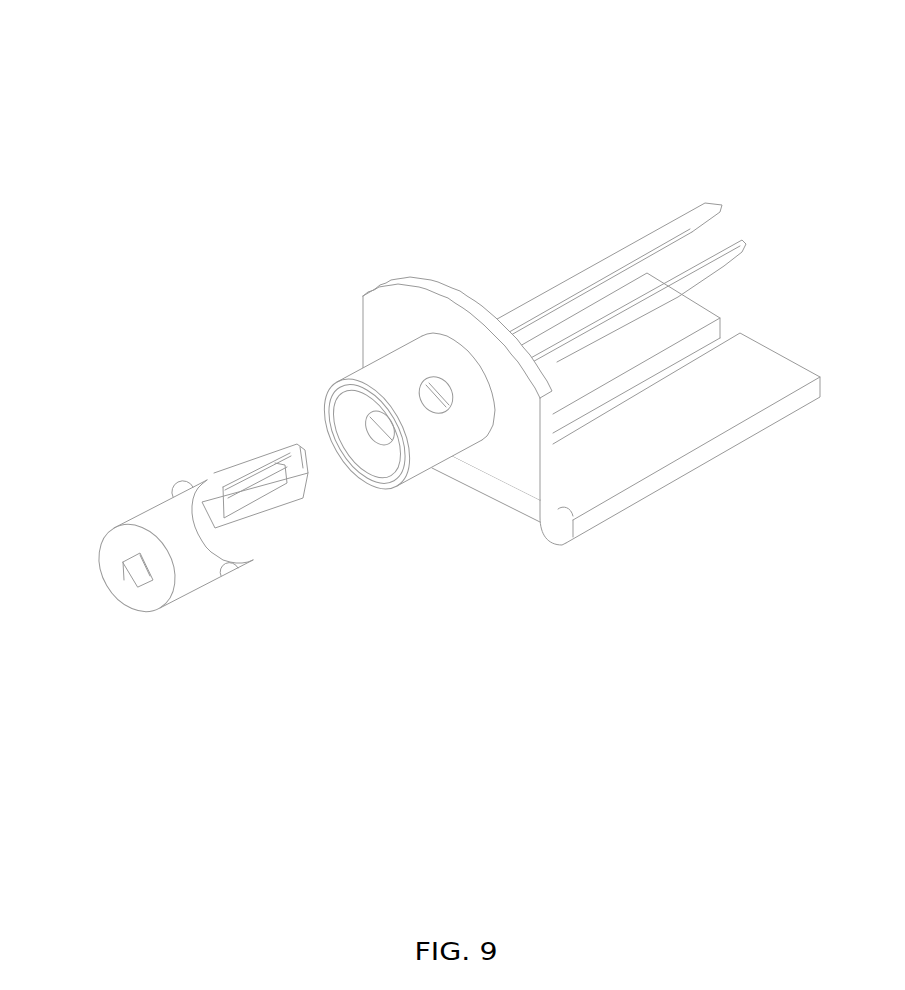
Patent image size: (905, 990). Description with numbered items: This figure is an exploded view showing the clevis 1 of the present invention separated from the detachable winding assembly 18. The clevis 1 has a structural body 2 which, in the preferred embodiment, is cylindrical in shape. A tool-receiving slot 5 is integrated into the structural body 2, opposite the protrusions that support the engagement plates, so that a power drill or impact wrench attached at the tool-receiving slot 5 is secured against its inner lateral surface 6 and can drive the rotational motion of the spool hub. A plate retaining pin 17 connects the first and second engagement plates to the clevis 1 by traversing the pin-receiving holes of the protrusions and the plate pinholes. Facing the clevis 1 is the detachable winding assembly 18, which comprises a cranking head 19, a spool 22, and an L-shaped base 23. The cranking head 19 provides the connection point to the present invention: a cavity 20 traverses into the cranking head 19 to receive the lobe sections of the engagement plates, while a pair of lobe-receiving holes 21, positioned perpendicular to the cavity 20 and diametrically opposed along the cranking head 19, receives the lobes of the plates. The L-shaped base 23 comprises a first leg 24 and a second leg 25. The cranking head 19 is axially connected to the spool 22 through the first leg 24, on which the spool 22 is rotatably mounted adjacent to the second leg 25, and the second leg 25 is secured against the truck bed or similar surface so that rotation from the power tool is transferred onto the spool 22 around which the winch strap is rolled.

The clevis 1 is at (180, 420).
The structural body 2 is at (157, 512).
The tool-receiving slot 5 is at (140, 580).
The inner lateral surface 6 is at (128, 560).
The plate retaining pin 17 is at (232, 578).
The detachable winding assembly 18 is at (663, 88).
The cranking head 19 is at (393, 488).
The cavity 20 is at (333, 411).
The pair of lobe-receiving holes 21 is at (387, 358).
The spool 22 is at (627, 243).
The L-shaped base 23 is at (753, 460).
The first leg 24 is at (392, 290).
The second leg 25 is at (666, 476).